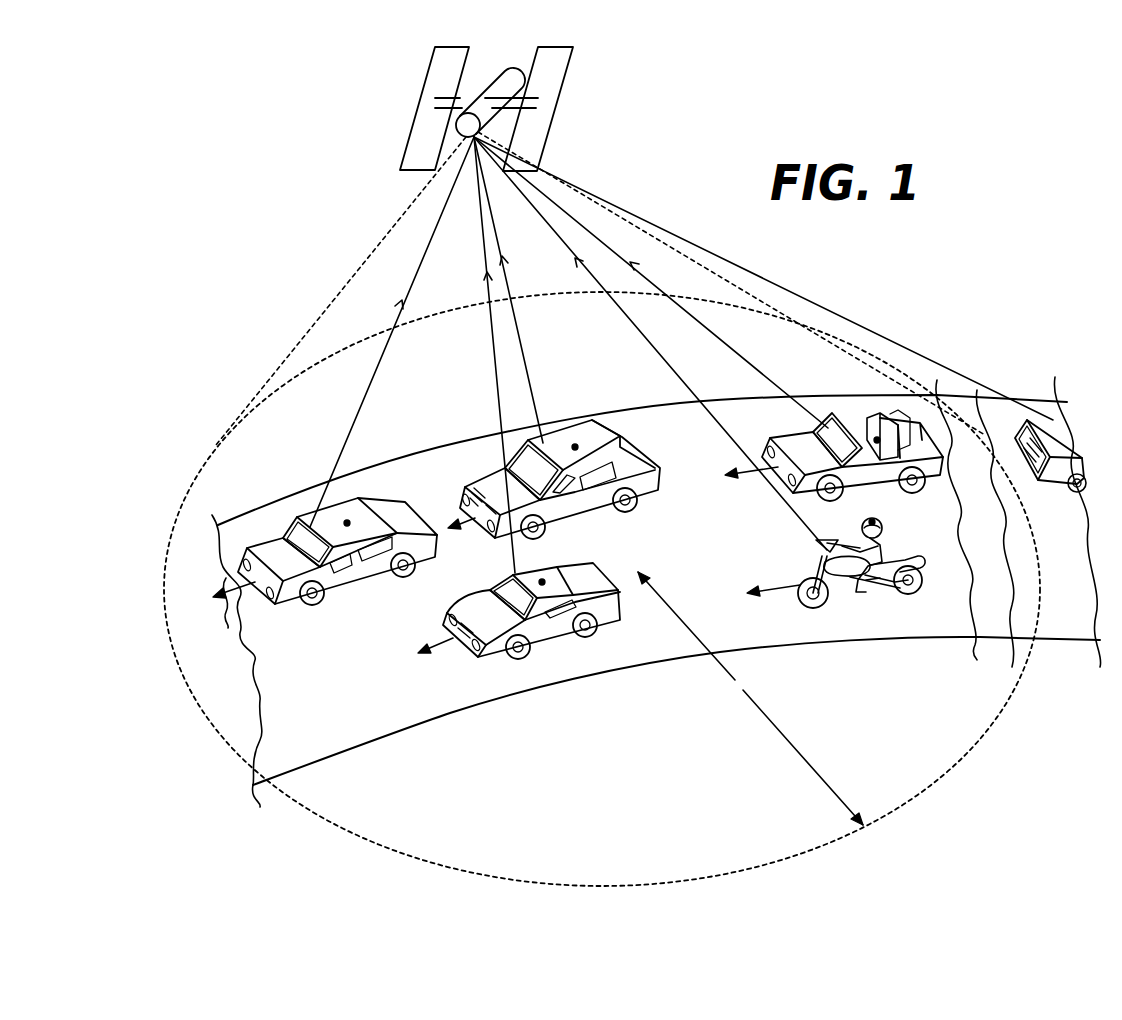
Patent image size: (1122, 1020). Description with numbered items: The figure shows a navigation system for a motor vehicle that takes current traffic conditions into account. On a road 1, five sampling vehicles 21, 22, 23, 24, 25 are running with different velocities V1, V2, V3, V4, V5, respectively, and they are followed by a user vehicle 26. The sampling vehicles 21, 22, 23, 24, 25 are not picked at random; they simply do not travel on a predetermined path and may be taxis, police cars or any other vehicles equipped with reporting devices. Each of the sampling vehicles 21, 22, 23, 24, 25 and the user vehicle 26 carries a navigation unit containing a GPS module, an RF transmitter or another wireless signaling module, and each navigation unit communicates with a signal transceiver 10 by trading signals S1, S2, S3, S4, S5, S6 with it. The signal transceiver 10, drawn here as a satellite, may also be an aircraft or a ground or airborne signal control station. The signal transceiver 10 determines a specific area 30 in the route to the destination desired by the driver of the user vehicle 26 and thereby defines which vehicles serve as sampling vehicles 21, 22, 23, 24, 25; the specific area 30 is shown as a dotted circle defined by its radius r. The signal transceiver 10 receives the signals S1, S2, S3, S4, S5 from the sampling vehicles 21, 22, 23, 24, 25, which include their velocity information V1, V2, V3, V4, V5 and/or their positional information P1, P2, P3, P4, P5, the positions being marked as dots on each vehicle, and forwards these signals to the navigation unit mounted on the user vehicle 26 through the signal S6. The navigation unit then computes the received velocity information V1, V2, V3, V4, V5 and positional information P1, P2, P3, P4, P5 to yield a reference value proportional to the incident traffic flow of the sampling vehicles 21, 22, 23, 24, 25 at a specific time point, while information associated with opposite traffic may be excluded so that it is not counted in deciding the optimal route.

The road 1 is at (927, 637).
The signal transceiver 10 is at (550, 102).
The sampling vehicle 21 is at (290, 538).
The sampling vehicle 22 is at (547, 480).
The sampling vehicle 23 is at (508, 636).
The sampling vehicle 24 is at (842, 607).
The sampling vehicle 25 is at (810, 433).
The user vehicle 26 is at (1048, 422).
The specific area 30 is at (342, 798).
The signal S1 is at (402, 300).
The signal S2 is at (507, 258).
The signal S3 is at (487, 273).
The signal S4 is at (575, 258).
The signal S5 is at (630, 262).
The signal S6 is at (793, 293).
The positional information P1 is at (347, 523).
The positional information P2 is at (575, 447).
The positional information P3 is at (542, 582).
The positional information P4 is at (872, 522).
The positional information P5 is at (877, 440).
The velocity V1 is at (229, 616).
The velocity V2 is at (463, 546).
The velocity V3 is at (425, 627).
The velocity V4 is at (768, 563).
The velocity V5 is at (790, 432).
The radius r is at (750, 698).